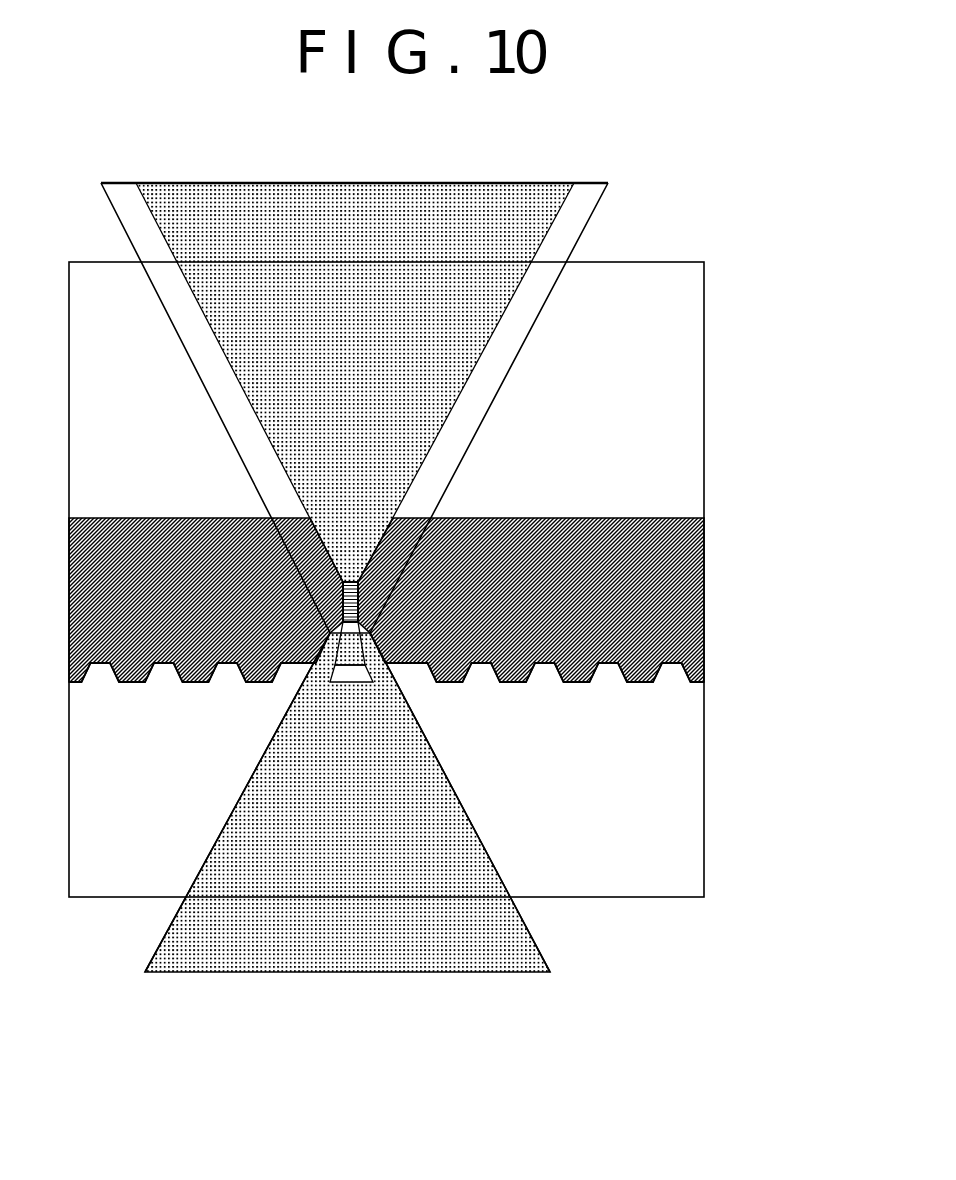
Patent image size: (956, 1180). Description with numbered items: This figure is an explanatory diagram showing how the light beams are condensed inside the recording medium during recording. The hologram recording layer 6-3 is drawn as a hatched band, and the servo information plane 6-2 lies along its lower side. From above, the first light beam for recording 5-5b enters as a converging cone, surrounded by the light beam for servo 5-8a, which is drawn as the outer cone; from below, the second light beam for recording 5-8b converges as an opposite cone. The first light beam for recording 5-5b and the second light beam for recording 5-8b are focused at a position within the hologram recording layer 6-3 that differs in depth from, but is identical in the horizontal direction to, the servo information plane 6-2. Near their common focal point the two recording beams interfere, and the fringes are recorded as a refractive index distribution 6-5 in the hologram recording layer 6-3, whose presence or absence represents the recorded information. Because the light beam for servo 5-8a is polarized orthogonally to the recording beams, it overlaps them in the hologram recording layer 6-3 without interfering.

The light beam for servo 5-8a is at (580, 218).
The first light beam for recording 5-5b is at (455, 327).
The refractive index distribution 6-5 is at (358, 600).
The hologram recording layer 6-3 is at (643, 583).
The servo information plane 6-2 is at (673, 662).
The light beam for second recording 5-8b is at (430, 845).